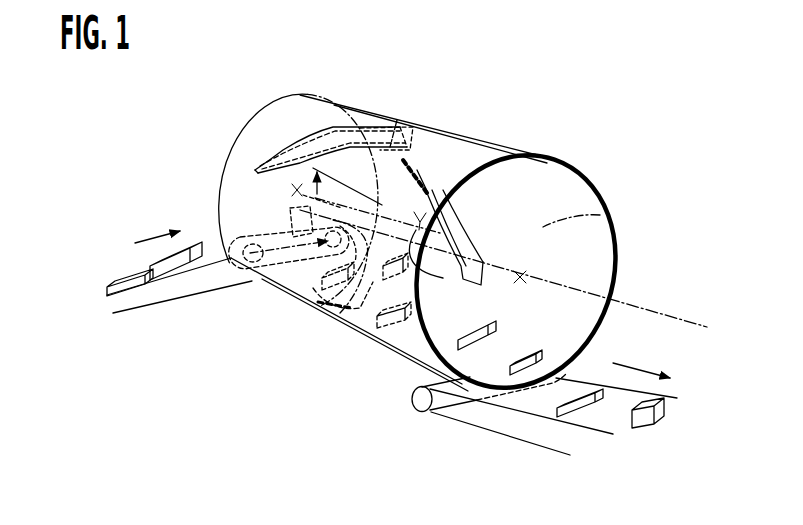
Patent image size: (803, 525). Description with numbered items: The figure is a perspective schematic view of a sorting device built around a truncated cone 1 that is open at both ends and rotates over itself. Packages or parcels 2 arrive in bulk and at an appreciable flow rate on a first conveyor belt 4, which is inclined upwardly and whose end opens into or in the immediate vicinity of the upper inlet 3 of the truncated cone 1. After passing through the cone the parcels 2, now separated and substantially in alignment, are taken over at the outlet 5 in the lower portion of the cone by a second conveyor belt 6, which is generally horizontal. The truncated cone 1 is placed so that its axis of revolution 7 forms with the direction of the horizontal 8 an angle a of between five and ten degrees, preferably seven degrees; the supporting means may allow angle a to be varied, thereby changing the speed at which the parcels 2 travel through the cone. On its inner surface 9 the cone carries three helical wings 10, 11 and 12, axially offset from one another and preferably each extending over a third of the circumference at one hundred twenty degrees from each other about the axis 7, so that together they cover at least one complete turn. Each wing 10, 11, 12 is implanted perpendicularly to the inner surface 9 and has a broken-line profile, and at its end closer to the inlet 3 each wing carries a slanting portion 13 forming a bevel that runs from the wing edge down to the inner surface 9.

The truncated cone 1 is at (586, 133).
The packages or parcels 2 is at (160, 257).
The upper inlet 3 is at (285, 103).
The first conveyor belt 4 is at (180, 281).
The outlet 5 is at (600, 215).
The second conveyor belt 6 is at (528, 417).
The axis of revolution 7 is at (343, 203).
The direction of the horizontal 8 is at (637, 308).
The inner surface 9 is at (581, 180).
The helical wing 10 is at (397, 118).
The helical wing 11 is at (347, 320).
The helical wing 12 is at (460, 223).
The slanting portion 13 is at (407, 213).
The angle a is at (434, 261).